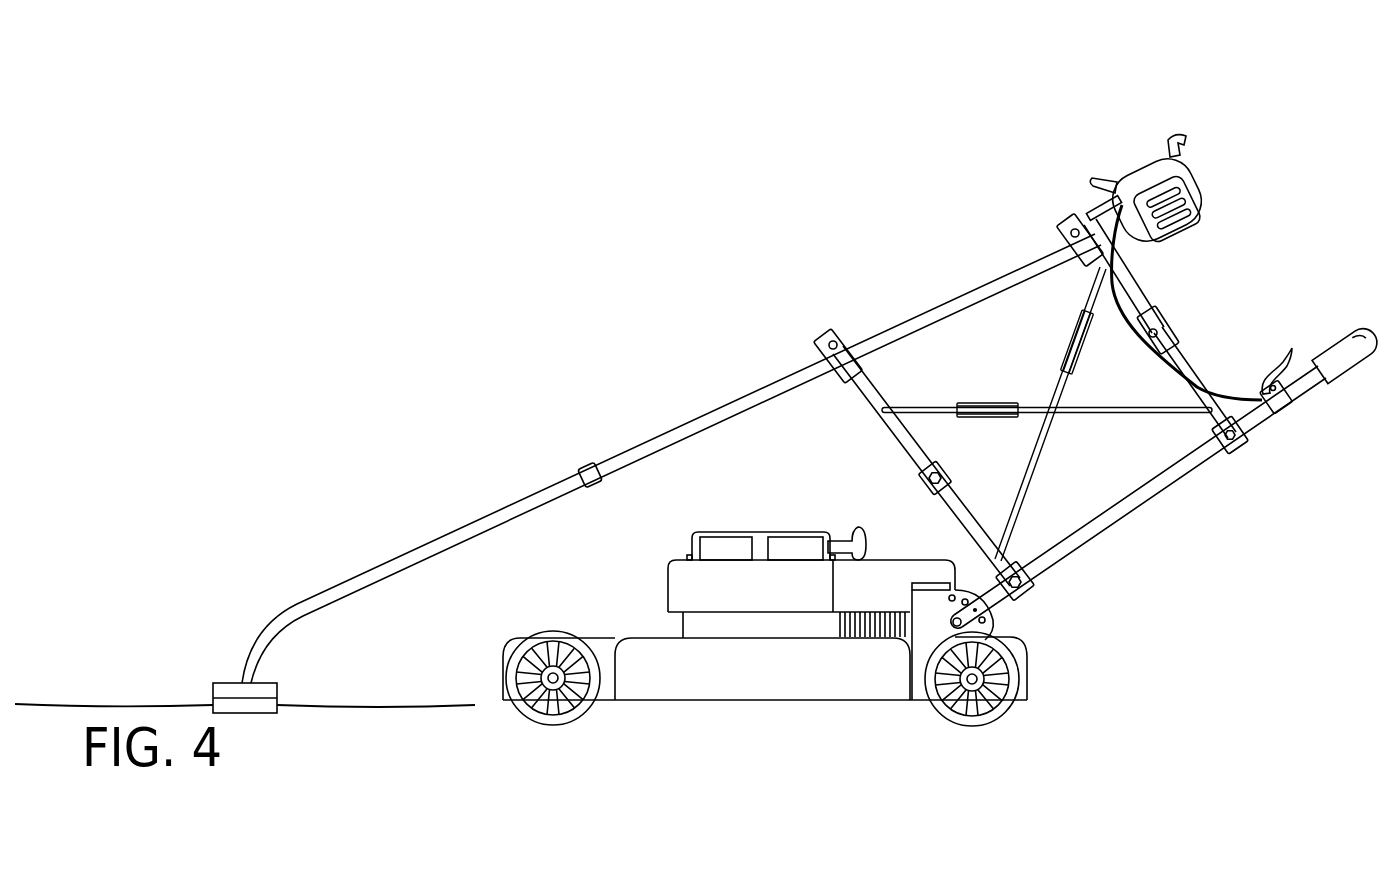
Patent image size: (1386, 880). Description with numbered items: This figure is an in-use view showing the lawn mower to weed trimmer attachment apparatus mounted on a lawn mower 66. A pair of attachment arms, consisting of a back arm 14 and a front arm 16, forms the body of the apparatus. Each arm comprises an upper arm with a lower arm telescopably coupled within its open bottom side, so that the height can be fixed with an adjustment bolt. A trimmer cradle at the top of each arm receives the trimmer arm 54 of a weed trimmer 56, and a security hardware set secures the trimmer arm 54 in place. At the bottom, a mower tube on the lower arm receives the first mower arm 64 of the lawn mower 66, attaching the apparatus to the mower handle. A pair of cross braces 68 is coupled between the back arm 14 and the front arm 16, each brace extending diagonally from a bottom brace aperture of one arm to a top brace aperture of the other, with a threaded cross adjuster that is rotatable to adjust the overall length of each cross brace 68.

The back arm 14 is at (1147, 327).
The front arm 16 is at (862, 382).
The trimmer arm 54 is at (657, 443).
The weed trimmer 56 is at (1137, 167).
The first mower arm 64 is at (1182, 472).
The lawn mower 66 is at (812, 658).
The pair of cross braces 68 is at (1093, 417).